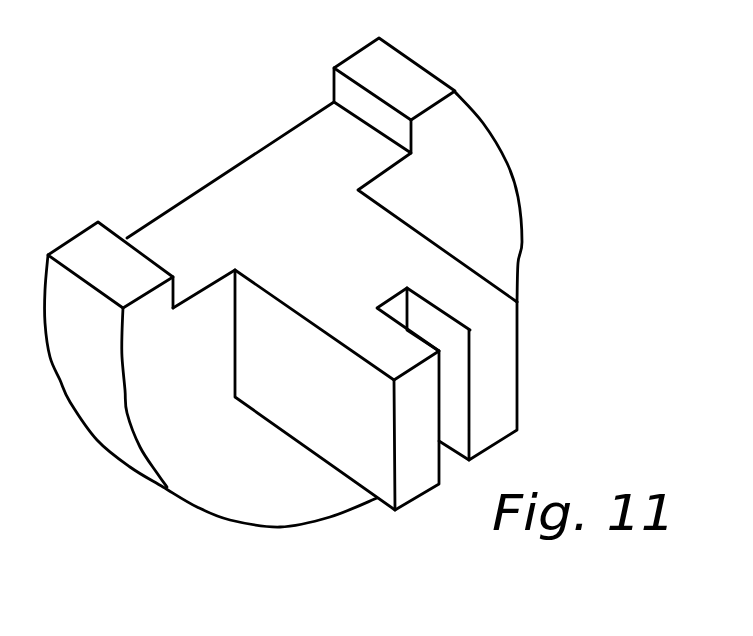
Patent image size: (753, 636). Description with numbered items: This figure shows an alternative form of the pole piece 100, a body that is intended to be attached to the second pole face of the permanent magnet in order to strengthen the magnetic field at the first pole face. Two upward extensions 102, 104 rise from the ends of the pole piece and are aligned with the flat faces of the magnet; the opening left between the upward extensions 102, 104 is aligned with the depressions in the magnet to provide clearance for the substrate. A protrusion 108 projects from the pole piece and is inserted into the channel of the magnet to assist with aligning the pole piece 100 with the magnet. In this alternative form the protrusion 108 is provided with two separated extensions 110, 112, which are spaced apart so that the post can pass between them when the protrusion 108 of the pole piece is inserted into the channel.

The pole piece 100 is at (200, 482).
The upward extension 102 is at (92, 240).
The upward extension 104 is at (347, 100).
The protrusion 108 is at (248, 202).
The separated extension 110 is at (368, 462).
The separated extension 112 is at (505, 354).